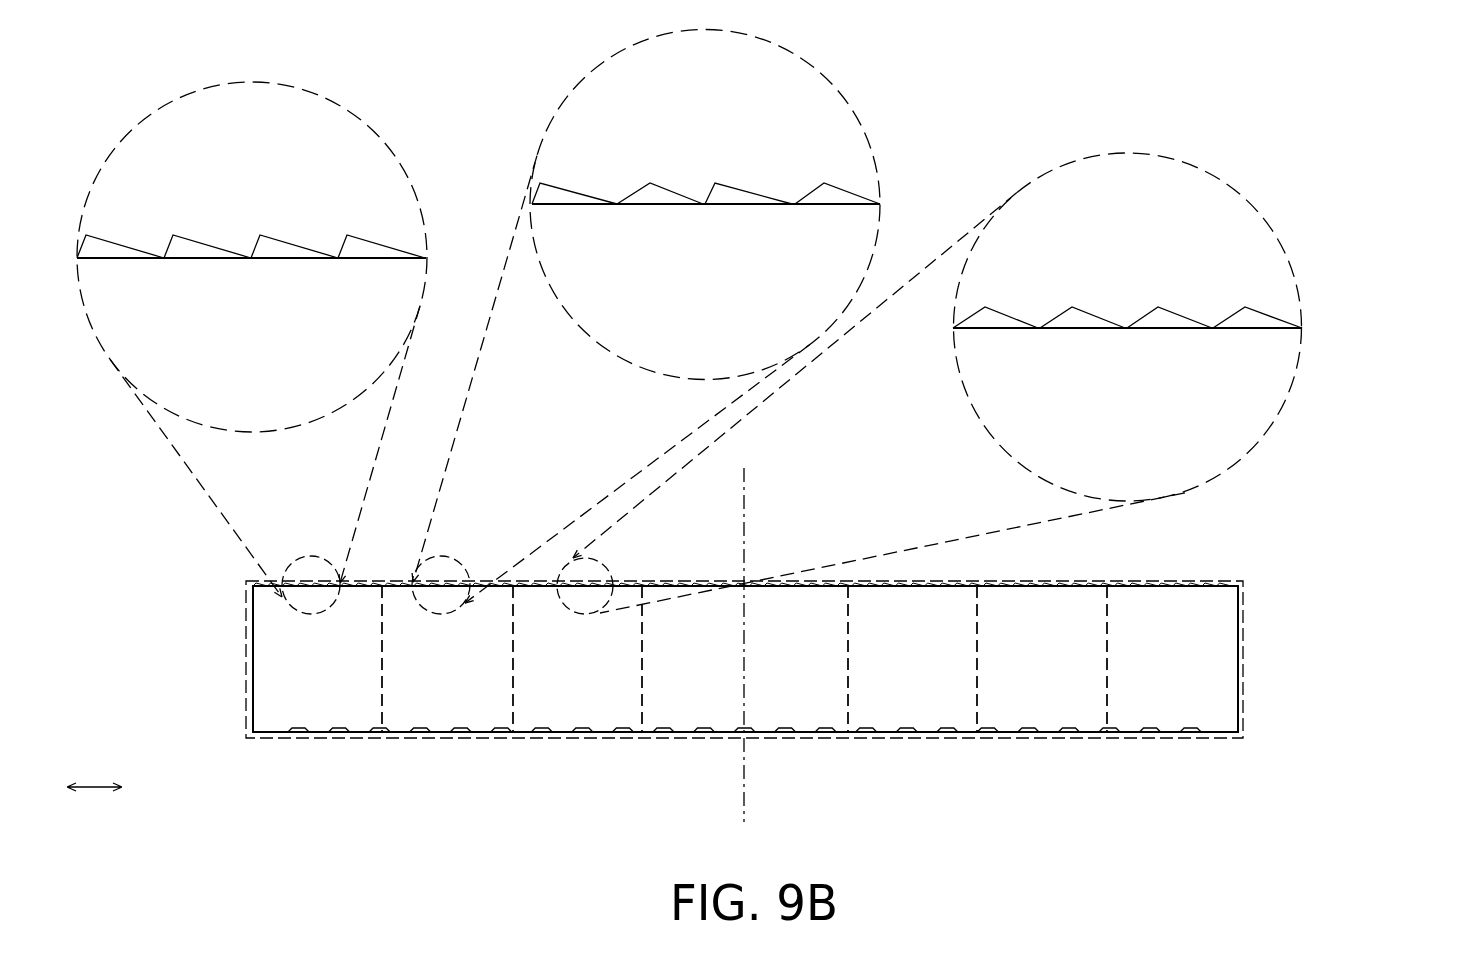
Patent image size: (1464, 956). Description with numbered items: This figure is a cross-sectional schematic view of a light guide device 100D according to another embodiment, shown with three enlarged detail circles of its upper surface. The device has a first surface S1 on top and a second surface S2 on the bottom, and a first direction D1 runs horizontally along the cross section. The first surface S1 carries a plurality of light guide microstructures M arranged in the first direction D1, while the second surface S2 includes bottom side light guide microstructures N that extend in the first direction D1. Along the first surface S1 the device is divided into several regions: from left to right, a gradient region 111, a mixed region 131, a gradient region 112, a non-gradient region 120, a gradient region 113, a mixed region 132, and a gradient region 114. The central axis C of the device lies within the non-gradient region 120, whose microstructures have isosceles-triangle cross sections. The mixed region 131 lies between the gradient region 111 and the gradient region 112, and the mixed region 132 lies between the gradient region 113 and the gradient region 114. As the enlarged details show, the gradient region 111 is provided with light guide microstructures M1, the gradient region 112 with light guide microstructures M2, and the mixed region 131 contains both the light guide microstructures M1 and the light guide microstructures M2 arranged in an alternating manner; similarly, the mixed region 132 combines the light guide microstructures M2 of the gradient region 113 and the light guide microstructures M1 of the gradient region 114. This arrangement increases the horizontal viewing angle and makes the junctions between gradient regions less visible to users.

The light guide device 100D is at (1442, 857).
The gradient region 111 is at (345, 738).
The mixed region 131 is at (450, 738).
The gradient region 112 is at (603, 738).
The non-gradient region 120 is at (778, 737).
The gradient region 113 is at (887, 738).
The mixed region 132 is at (1038, 737).
The gradient region 114 is at (1143, 737).
The bottom side light guide microstructures N is at (990, 733).
The light guide microstructures M is at (1162, 583).
The light guide microstructures M1 is at (125, 250).
The light guide microstructures M2 is at (678, 193).
The first surface S1 is at (1218, 585).
The second surface S2 is at (1220, 736).
The central axis C is at (745, 626).
The first direction D1 is at (94, 810).